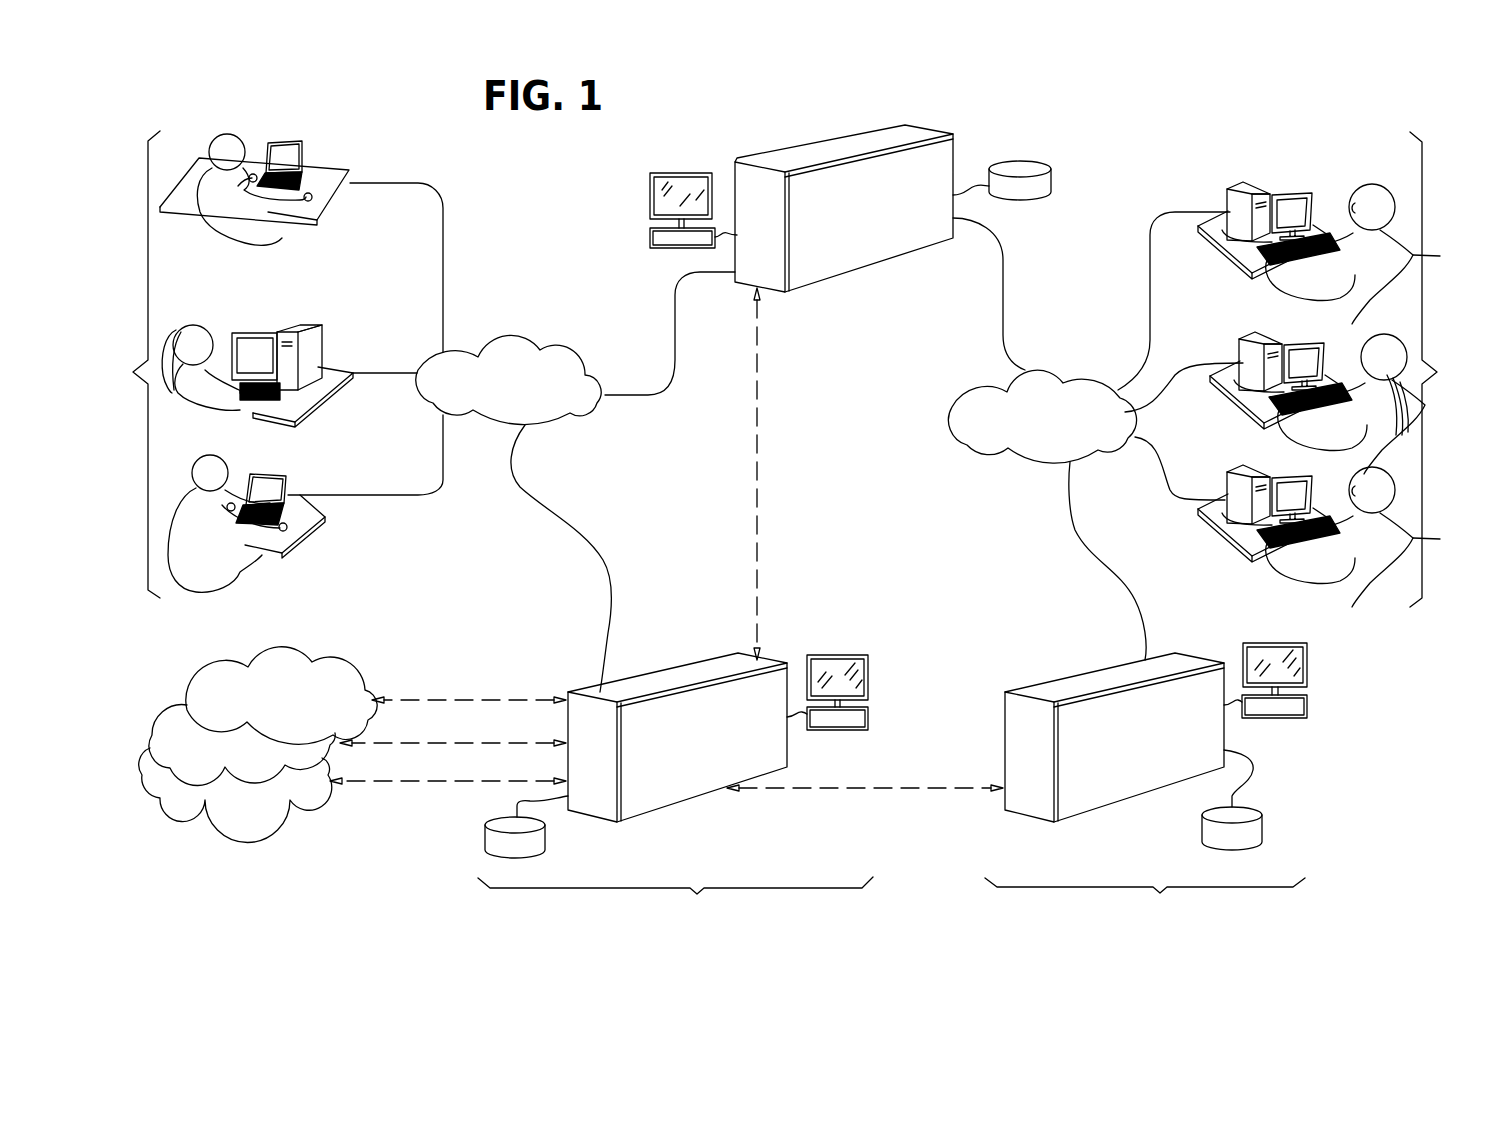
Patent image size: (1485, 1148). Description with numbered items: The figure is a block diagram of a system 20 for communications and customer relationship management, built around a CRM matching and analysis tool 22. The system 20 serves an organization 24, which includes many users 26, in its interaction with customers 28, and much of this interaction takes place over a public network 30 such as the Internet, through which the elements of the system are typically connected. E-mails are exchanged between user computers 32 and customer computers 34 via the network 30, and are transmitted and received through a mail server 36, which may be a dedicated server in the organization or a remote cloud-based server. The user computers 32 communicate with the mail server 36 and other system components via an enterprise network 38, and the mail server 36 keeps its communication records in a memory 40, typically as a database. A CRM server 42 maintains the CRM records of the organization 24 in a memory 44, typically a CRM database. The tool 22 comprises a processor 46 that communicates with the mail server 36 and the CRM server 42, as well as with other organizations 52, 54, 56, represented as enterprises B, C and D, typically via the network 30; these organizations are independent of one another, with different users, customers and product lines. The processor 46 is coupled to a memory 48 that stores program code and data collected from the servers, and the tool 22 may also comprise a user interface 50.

The system 20 is at (1238, 118).
The CRM matching and analysis tool 22 is at (675, 904).
The organization 24 is at (1145, 904).
The users 26 is at (1441, 369).
The customers 28 is at (129, 364).
The public network 30 is at (507, 336).
The user computers 32 is at (1226, 213).
The customer computers 34 is at (305, 152).
The mail server 36 is at (778, 156).
The enterprise network 38 is at (1060, 367).
The memory 40 is at (1052, 184).
The CRM server 42 is at (1083, 674).
The memory 44 is at (1264, 826).
The processor 46 is at (655, 672).
The memory 48 is at (486, 840).
The user interface 50 is at (828, 656).
The organization 52 is at (206, 670).
The organization 54 is at (178, 700).
The organization 56 is at (145, 752).